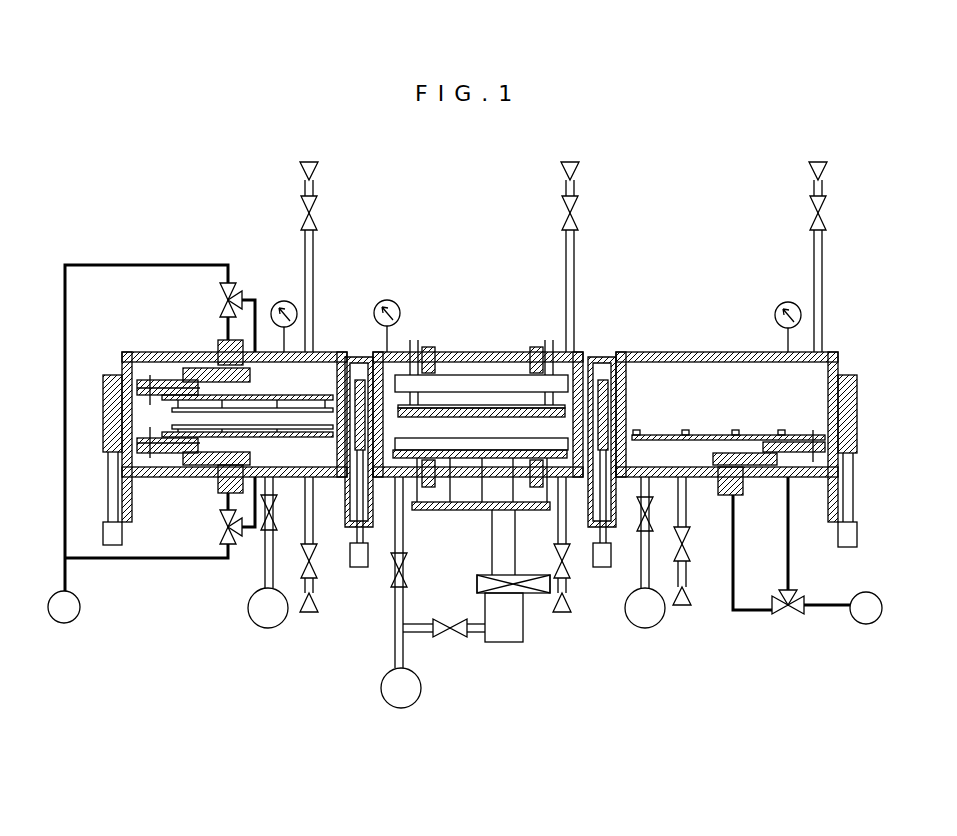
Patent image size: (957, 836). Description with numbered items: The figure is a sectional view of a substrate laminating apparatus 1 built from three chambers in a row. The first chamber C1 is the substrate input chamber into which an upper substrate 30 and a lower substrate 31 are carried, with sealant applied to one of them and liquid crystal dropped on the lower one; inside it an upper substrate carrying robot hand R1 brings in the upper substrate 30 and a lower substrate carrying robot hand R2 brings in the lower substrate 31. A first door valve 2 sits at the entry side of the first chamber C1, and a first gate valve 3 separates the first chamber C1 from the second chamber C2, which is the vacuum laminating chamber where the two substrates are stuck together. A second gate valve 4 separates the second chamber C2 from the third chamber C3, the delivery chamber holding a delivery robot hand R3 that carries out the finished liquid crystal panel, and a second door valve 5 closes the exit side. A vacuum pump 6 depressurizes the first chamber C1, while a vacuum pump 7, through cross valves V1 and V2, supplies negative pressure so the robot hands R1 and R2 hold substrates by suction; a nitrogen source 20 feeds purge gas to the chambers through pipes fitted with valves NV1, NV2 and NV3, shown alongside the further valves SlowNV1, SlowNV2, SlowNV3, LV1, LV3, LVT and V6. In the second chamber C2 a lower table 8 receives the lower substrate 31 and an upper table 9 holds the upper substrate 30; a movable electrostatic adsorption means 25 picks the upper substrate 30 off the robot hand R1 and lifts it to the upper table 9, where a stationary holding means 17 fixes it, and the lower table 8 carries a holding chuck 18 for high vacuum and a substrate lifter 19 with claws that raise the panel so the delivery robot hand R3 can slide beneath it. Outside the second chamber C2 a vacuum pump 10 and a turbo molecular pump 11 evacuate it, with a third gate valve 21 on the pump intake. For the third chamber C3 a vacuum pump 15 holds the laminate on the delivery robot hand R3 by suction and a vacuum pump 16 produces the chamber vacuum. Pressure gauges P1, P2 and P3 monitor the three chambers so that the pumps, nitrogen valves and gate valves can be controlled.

The plasma processing apparatus 1 is at (883, 348).
The first door valve 2 is at (110, 372).
The first gate valve 3 is at (356, 365).
The second gate valve 4 is at (640, 357).
The second door valve 5 is at (858, 405).
The vacuum pump 6 is at (262, 612).
The vacuum pump 7 is at (68, 612).
The lower table 8 is at (395, 478).
The upper table 9 is at (573, 360).
The vacuum pump 10 is at (381, 697).
The turbo molecular pump 11 is at (503, 642).
The vacuum pump 15 is at (868, 625).
The vacuum pump 16 is at (645, 628).
The holding means 17 is at (595, 360).
The holding chuck 18 is at (644, 540).
The substrate lifter 19 is at (513, 593).
The nitrogen source 20 is at (305, 165).
The third gate valve 21 is at (530, 594).
The electrostatic adsorption means 25 is at (500, 385).
The upper substrate 30 is at (204, 390).
The lower substrate 31 is at (200, 467).
The upper substrate carrying robot hand R1 is at (170, 380).
The lower substrate carrying robot hand R2 is at (167, 455).
The delivery robot hand R3 is at (793, 458).
The cross valve V1 is at (221, 317).
The cross valve V2 is at (221, 512).
The three-way valve V6 is at (791, 562).
The pressure gauge P1 is at (280, 301).
The pressure gauge P2 is at (387, 300).
The pressure gauge P3 is at (788, 302).
The leak valve LV1 is at (287, 567).
The leak valve LV3 is at (667, 576).
The leak valve LVT is at (444, 643).
The valve NV1 is at (332, 536).
The valve NV2 is at (586, 537).
The valve NV3 is at (705, 532).
The slow needle valve SlowNV1 is at (258, 266).
The slow needle valve SlowNV2 is at (620, 266).
The slow needle valve SlowNV3 is at (868, 266).
The first chamber C1 is at (217, 777).
The second chamber C2 is at (510, 777).
The third chamber C3 is at (783, 777).